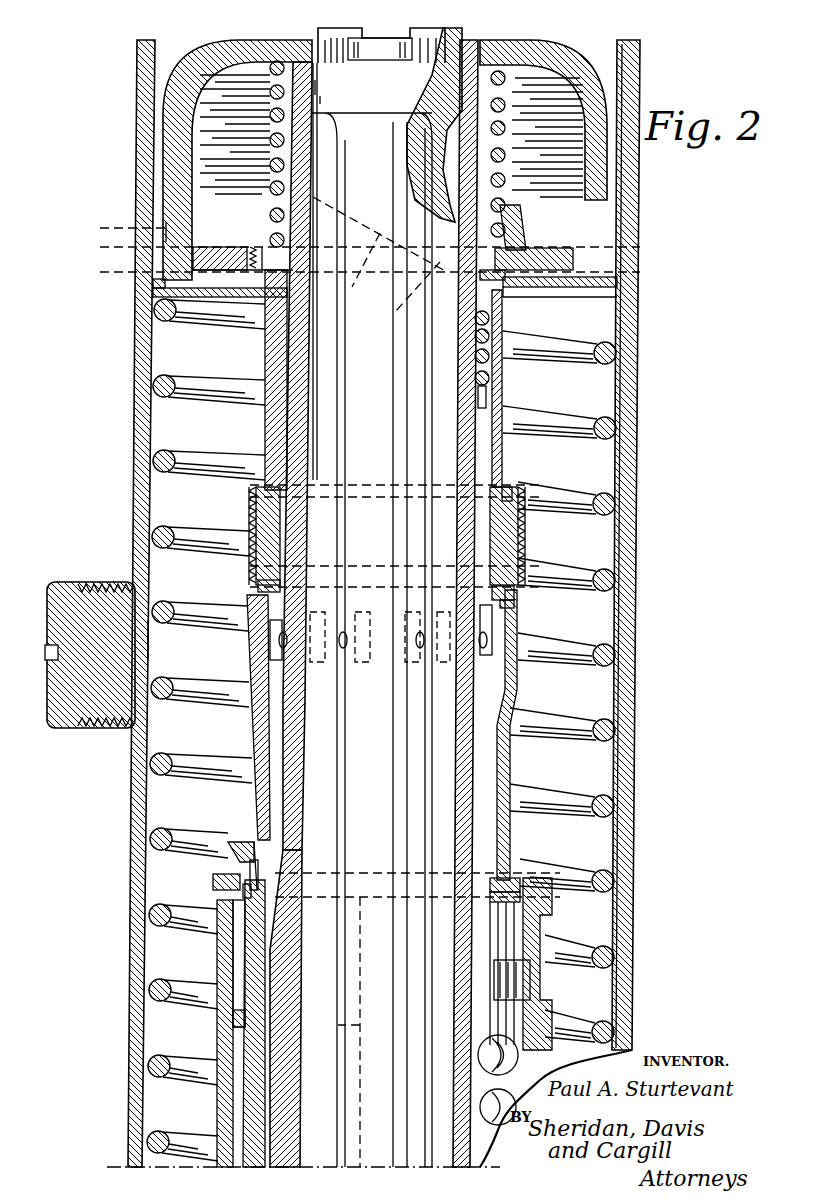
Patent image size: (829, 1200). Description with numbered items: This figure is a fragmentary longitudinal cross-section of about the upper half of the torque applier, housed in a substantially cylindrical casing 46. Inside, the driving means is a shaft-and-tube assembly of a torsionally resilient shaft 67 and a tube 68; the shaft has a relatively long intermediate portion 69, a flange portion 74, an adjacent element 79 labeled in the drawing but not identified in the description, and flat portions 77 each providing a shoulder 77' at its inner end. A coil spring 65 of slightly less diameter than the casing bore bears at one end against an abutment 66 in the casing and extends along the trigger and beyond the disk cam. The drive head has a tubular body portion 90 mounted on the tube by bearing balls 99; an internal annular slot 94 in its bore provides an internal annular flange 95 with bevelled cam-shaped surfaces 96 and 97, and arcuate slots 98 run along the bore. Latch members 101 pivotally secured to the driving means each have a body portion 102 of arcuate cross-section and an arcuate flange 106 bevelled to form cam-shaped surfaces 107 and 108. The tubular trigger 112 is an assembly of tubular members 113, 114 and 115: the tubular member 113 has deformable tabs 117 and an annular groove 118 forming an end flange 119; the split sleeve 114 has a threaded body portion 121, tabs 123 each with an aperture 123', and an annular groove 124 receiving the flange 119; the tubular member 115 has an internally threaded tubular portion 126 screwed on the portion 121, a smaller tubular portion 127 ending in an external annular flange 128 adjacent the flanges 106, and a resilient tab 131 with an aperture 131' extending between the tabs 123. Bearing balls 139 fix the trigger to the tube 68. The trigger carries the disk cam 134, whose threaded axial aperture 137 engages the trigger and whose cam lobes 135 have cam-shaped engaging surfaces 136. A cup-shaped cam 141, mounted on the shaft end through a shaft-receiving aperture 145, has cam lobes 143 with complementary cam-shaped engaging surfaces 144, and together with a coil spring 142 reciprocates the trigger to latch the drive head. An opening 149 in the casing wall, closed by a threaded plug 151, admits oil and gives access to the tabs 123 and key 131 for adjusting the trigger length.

The casing 46 is at (640, 78).
The threaded plug 151 is at (60, 584).
The cup-shaped cam 141 is at (228, 44).
The cam lobes 135 is at (170, 232).
The deformable tabs 117 is at (260, 248).
The abutment 66 is at (200, 294).
The cam lobes 143 is at (150, 283).
The cam-shaped engaging surface 136 is at (370, 697).
The shaft-receiving aperture 145 is at (318, 50).
The flat portions 77 is at (380, 46).
The shoulder 77' is at (449, 115).
The flange portion 74 is at (322, 83).
The liner wall 79 is at (322, 99).
The coil spring 142 is at (504, 162).
The cam-shaped engaging surface 144 is at (523, 232).
The axial aperture 137 is at (547, 250).
The disk cam 134 is at (570, 266).
The shaft 67 is at (384, 382).
The tube 68 is at (282, 1042).
The intermediate portion 69 is at (345, 418).
The tubular trigger 112 is at (265, 355).
The tubular member 113 is at (278, 380).
The coil spring 65 is at (168, 1130).
The tubular member 115 is at (520, 560).
The bearing balls 139 is at (490, 388).
The annular groove 118 is at (252, 515).
The split sleeve 114 is at (522, 528).
The threaded body portion 121 is at (530, 510).
The end flange 119 is at (256, 582).
The annular groove 124 is at (514, 594).
The internally threaded tubular portion 126 is at (520, 605).
The opening 149 is at (150, 645).
The aperture 123' is at (529, 630).
The aperture 131' is at (239, 647).
The tabs 123 is at (383, 655).
The resilient tab 131 is at (232, 717).
The tubular portion 127 is at (515, 760).
The cam-shaped surface 108 is at (256, 836).
The arcuate flange 106 is at (232, 848).
The cam-shaped surface 107 is at (232, 870).
The cam-shaped surface 97 is at (238, 882).
The cam-shaped surface 96 is at (232, 897).
The external annular flange 128 is at (535, 856).
The internal annular flange 95 is at (550, 906).
The tubular body portion 90 is at (545, 1000).
The bearing balls 99 is at (515, 1095).
The internal annular slot 94 is at (232, 946).
The latch members 101 is at (238, 975).
The body portion 102 is at (235, 960).
The arcuate slots 98 is at (240, 1086).